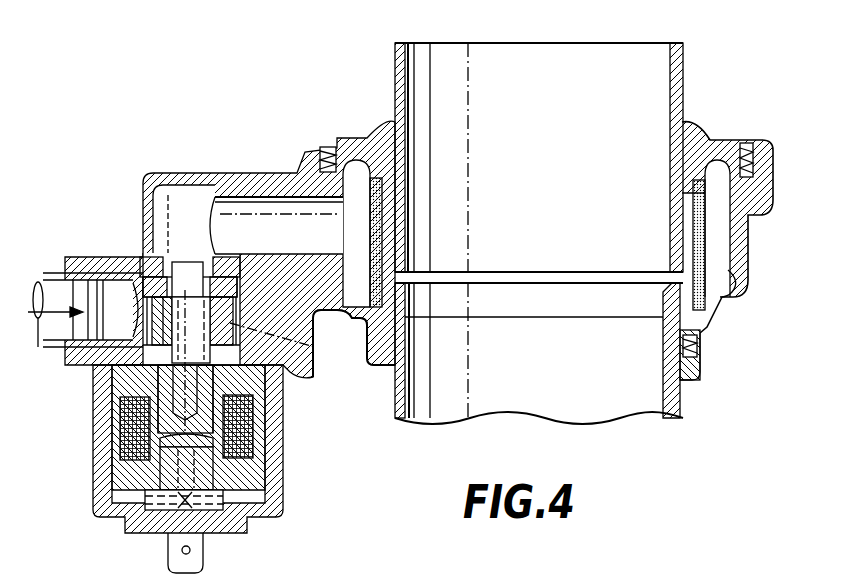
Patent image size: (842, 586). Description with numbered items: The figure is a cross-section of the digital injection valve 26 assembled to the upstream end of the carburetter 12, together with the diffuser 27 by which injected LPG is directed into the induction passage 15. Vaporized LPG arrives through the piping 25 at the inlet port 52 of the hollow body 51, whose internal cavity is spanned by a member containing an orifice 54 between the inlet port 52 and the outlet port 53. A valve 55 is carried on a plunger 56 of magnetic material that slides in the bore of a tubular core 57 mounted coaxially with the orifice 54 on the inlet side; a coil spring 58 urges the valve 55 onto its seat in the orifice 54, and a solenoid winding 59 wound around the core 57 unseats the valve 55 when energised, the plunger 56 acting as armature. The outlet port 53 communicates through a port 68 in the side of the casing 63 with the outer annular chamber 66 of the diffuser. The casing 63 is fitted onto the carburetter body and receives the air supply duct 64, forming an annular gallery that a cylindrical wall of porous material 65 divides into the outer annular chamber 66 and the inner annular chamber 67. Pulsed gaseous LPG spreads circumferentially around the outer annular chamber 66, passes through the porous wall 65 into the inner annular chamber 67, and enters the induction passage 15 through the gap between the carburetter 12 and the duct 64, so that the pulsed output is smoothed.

The carburetter 12 is at (680, 410).
The induction passage 15 is at (660, 405).
The piping 25 is at (53, 326).
The injection valve 26 is at (136, 171).
The diffuser 27 is at (720, 126).
The hollow body 51 is at (277, 487).
The inlet port 52 is at (117, 287).
The outlet port 53 is at (245, 222).
The orifice 54 is at (182, 265).
The valve 55 is at (163, 345).
The plunger 56 is at (195, 398).
The tubular core 57 is at (240, 470).
The coil spring 58 is at (342, 360).
The solenoid winding 59 is at (133, 442).
The casing 63 is at (738, 303).
The air supply duct 64 is at (678, 84).
The cylindrical wall of porous material 65 is at (718, 272).
The outer annular chamber 66 is at (722, 251).
The inner annular chamber 67 is at (687, 300).
The port 68 is at (310, 207).